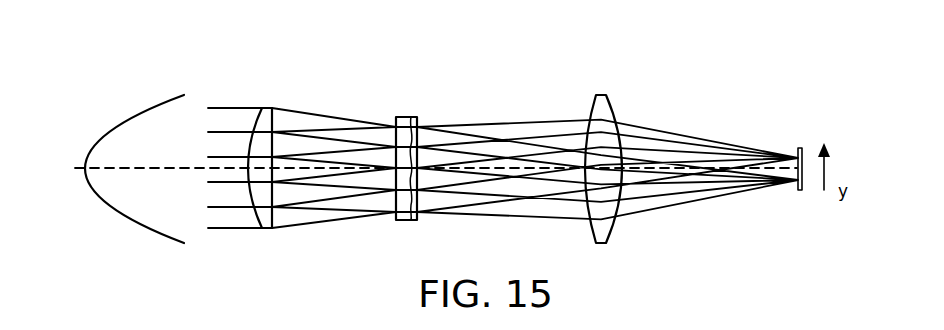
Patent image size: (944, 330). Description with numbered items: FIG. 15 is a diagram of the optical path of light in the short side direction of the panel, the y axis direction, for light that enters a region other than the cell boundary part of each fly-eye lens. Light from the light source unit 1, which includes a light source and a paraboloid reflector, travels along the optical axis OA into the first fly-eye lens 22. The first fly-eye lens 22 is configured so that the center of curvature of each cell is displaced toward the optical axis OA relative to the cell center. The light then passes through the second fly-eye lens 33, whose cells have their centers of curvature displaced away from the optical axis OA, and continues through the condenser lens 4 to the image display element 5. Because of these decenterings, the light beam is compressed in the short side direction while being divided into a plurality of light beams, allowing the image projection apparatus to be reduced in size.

The light source unit 1 is at (132, 226).
The first fly-eye lens 22 is at (262, 223).
The second fly-eye lens 33 is at (393, 213).
The condenser lens 4 is at (590, 222).
The image display element 5 is at (793, 186).
The optical axis OA is at (172, 168).